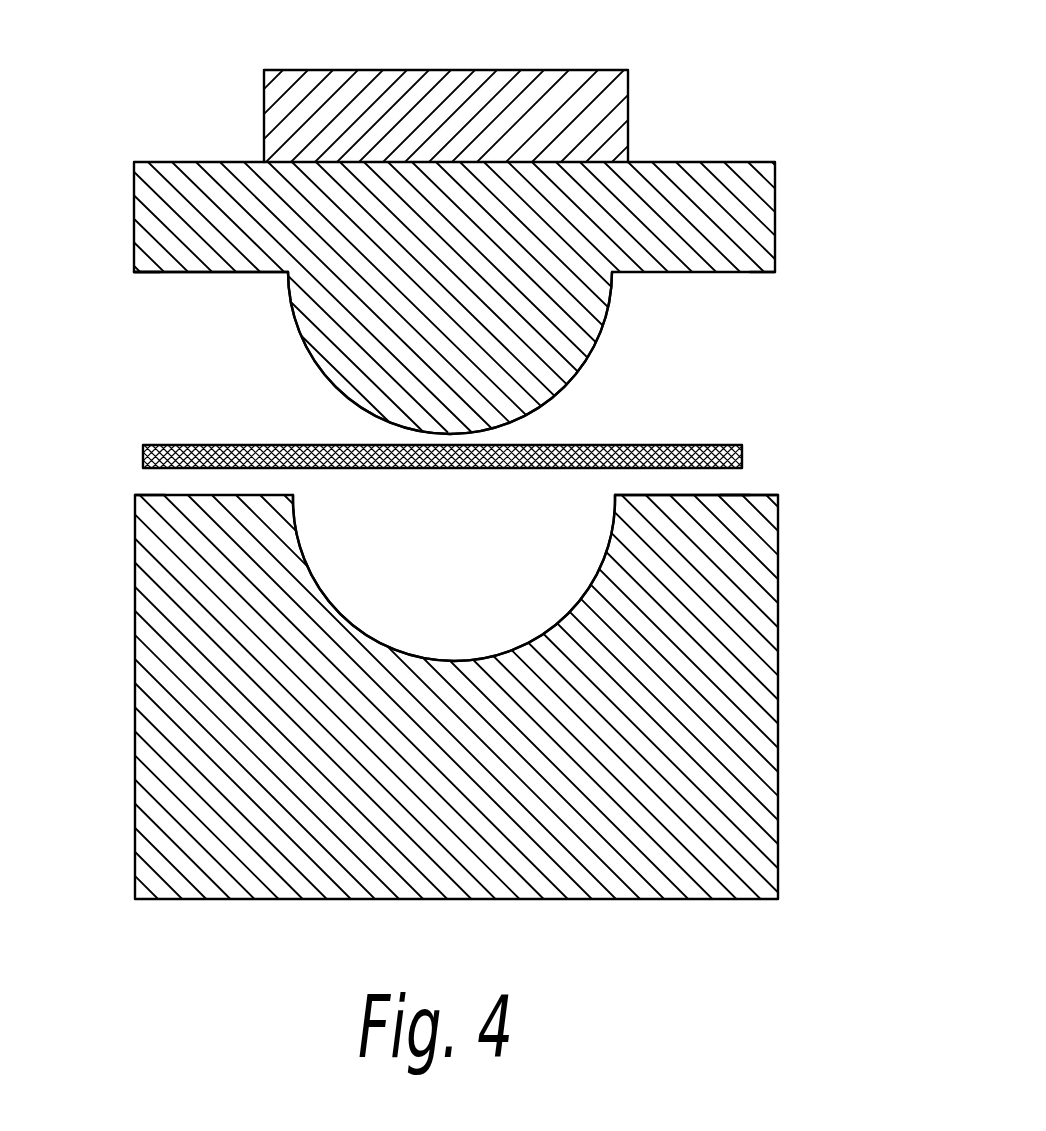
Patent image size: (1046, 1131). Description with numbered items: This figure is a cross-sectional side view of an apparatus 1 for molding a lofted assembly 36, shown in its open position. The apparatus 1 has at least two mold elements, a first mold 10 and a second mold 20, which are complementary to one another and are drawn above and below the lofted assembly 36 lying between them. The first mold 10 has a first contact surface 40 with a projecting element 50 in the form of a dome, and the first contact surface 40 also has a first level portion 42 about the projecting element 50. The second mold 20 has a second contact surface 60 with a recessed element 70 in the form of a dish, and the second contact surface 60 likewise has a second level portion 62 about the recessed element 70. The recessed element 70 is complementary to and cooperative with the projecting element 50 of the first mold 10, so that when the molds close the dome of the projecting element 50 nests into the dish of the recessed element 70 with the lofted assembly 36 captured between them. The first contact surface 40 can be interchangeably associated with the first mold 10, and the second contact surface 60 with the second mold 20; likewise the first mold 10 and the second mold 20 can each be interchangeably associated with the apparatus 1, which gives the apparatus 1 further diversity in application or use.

The apparatus 1 is at (137, 87).
The first mold 10 is at (678, 213).
The second mold 20 is at (683, 657).
The lofted assembly 36 is at (672, 443).
The first contact surface 40 is at (308, 345).
The first level portion 42 is at (146, 273).
The projecting element 50 is at (604, 323).
The second contact surface 60 is at (757, 494).
The second level portion 62 is at (160, 497).
The recessed element 70 is at (303, 548).